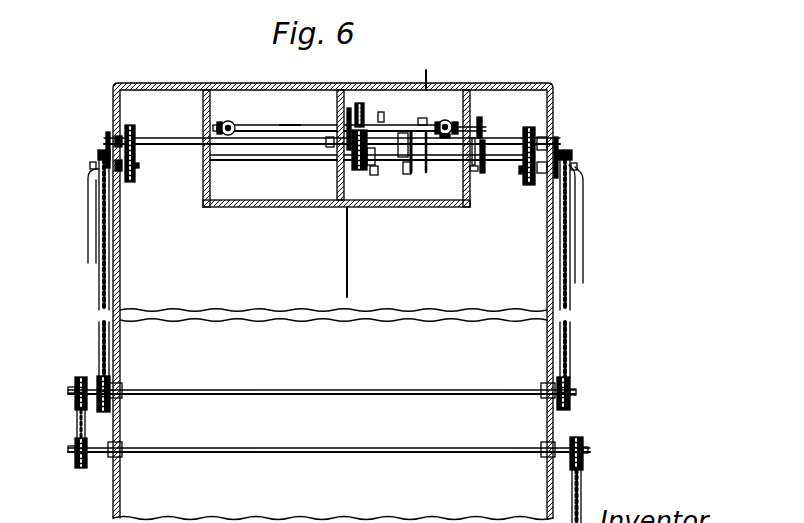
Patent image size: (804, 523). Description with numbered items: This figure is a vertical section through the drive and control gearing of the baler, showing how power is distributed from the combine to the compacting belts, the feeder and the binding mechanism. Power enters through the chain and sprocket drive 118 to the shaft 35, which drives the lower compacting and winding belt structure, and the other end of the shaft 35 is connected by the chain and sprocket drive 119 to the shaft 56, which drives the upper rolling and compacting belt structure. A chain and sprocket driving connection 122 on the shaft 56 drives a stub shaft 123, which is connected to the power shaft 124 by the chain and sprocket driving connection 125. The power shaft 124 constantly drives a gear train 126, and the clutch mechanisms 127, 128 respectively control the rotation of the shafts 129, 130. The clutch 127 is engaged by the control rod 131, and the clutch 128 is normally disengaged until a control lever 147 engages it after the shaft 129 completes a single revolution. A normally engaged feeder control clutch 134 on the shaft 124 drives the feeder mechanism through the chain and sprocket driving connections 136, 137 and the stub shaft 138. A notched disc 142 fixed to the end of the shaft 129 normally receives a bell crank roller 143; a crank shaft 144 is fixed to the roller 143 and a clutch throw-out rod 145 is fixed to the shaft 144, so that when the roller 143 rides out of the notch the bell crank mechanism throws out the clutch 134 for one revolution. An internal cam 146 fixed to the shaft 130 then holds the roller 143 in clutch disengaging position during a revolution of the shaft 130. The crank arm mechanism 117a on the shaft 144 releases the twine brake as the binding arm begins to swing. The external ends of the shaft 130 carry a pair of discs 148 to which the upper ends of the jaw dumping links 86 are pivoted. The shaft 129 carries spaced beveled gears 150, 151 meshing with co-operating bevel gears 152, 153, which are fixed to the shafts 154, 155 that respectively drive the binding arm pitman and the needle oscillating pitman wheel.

The shaft 35 is at (370, 449).
The shaft 56 is at (362, 390).
The jaw dumping links 86 is at (90, 215).
The crank arm mechanism 117a is at (433, 66).
The chain and sprocket drive 118 is at (584, 481).
The chain and sprocket drive 119 is at (77, 418).
The chain and sprocket driving connection 122 is at (100, 303).
The stub shaft 123 is at (137, 166).
The power shaft 124 is at (156, 140).
The chain and sprocket driving connection 125 is at (139, 130).
The gear train 126 is at (359, 100).
The clutch mechanism 127 is at (352, 106).
The clutch mechanism 128 is at (367, 171).
The shaft 129 is at (300, 103).
The shaft 130 is at (272, 160).
The control rod 131 is at (345, 268).
The feeder control clutch 134 is at (398, 131).
The chain and sprocket driving connection 136 is at (536, 130).
The chain and sprocket driving connection 137 is at (571, 305).
The stub shaft 138 is at (521, 176).
The notched disc 142 is at (483, 123).
The bell crank roller 143 is at (485, 142).
The crank shaft 144 is at (426, 176).
The clutch throw-out rod 145 is at (416, 173).
The internal cam 146 is at (506, 178).
The control lever 147 is at (380, 176).
The discs 148 is at (106, 139).
The beveled gear 150 is at (224, 121).
The beveled gear 151 is at (446, 120).
The bevel gear 152 is at (229, 124).
The bevel gear 153 is at (437, 121).
The shaft 154 is at (236, 128).
The shaft 155 is at (441, 132).